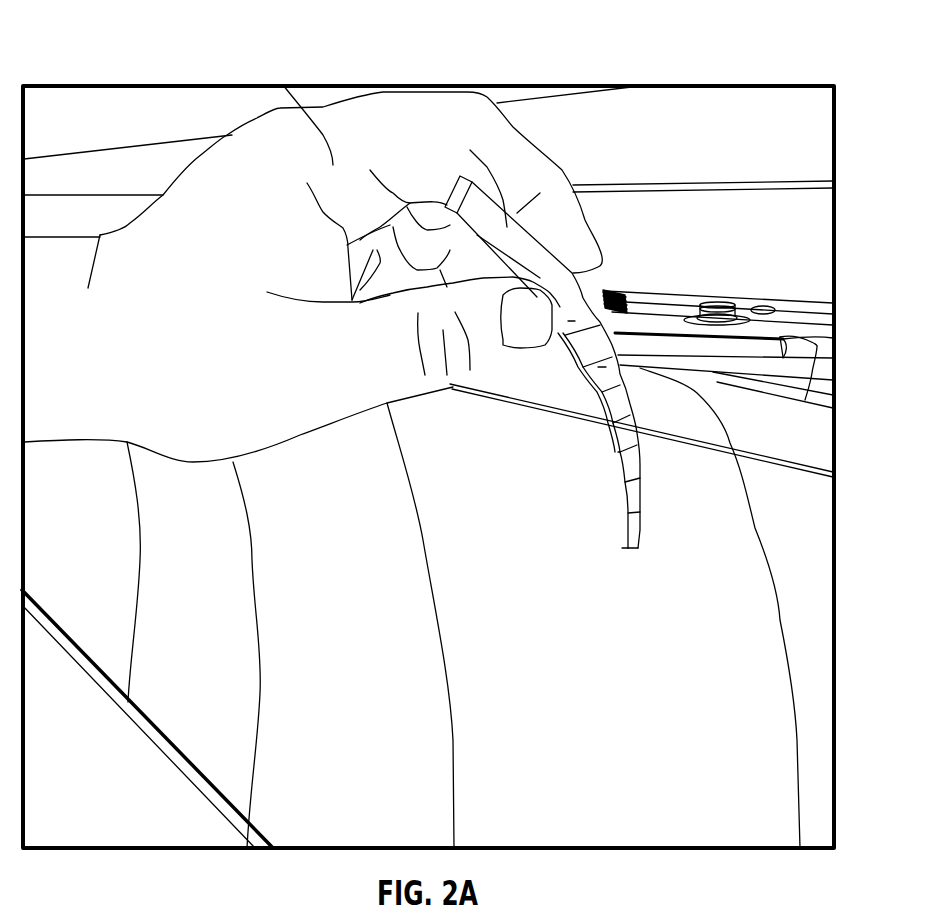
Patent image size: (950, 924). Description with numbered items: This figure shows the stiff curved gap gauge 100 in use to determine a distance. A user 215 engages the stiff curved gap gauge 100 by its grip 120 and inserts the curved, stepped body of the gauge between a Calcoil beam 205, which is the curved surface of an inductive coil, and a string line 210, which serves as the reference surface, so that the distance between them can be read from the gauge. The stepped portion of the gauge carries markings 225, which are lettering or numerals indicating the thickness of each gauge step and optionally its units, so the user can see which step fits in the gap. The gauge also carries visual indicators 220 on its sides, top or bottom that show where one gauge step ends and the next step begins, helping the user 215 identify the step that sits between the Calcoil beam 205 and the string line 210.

The stiff curved gap gauge 100 is at (568, 282).
The grip 120 is at (472, 176).
The user 215 is at (333, 165).
The markings 225 is at (622, 302).
The Calcoil beam 205 is at (825, 343).
The string line 210 is at (692, 442).
The visual indicators 220 is at (600, 367).